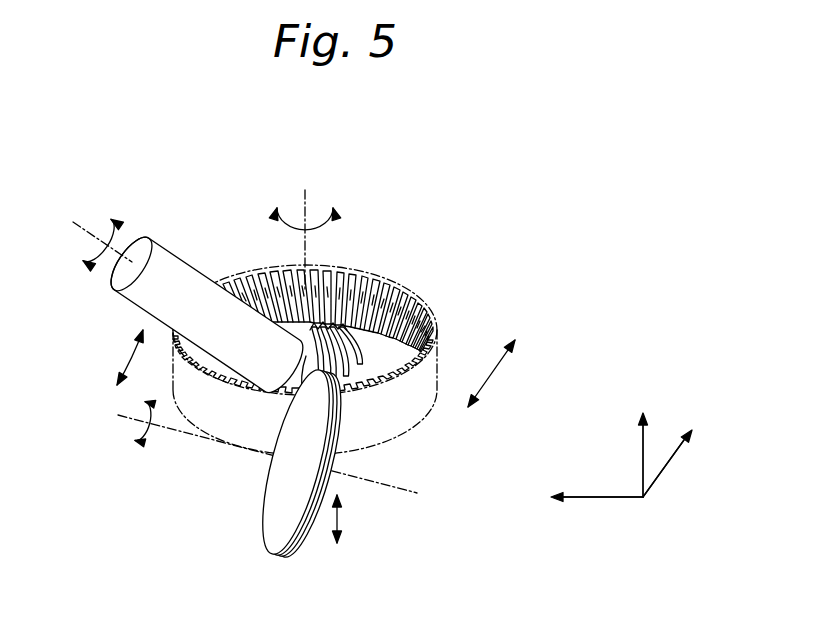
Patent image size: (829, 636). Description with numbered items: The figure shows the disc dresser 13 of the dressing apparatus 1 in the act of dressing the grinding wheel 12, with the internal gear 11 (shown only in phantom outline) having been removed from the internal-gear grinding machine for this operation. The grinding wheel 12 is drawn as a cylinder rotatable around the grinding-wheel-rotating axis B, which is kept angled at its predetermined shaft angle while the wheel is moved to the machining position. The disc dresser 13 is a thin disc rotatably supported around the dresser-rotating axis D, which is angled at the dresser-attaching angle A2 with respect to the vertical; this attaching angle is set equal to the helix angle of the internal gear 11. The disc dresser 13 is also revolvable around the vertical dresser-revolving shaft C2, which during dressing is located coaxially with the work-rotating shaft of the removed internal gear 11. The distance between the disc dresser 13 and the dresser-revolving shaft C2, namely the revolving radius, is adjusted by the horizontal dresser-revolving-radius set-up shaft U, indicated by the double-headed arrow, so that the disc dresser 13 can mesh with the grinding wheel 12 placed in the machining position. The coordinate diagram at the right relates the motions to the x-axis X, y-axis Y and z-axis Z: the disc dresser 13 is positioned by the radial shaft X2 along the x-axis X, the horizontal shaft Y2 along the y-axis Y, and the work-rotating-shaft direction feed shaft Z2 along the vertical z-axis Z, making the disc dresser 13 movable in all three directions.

The dressing apparatus 1 is at (323, 363).
The internal gear 11 is at (400, 287).
The grinding wheel 12 is at (345, 340).
The disc dresser 13 is at (303, 537).
The grinding-wheel-rotating axis B is at (180, 299).
The dresser-revolving shaft C2 is at (304, 225).
The dresser-rotating axis D is at (255, 445).
The dresser-attaching angle A2 is at (116, 357).
The dresser-revolving-radius set-up shaft U is at (495, 373).
The x-axis X is at (674, 449).
The y-axis Y is at (588, 499).
The z-axis Z is at (645, 441).
The radial shaft X2 is at (665, 465).
The horizontal shaft Y2 is at (605, 498).
The work-rotating-shaft direction feed shaft Z2 is at (642, 457).